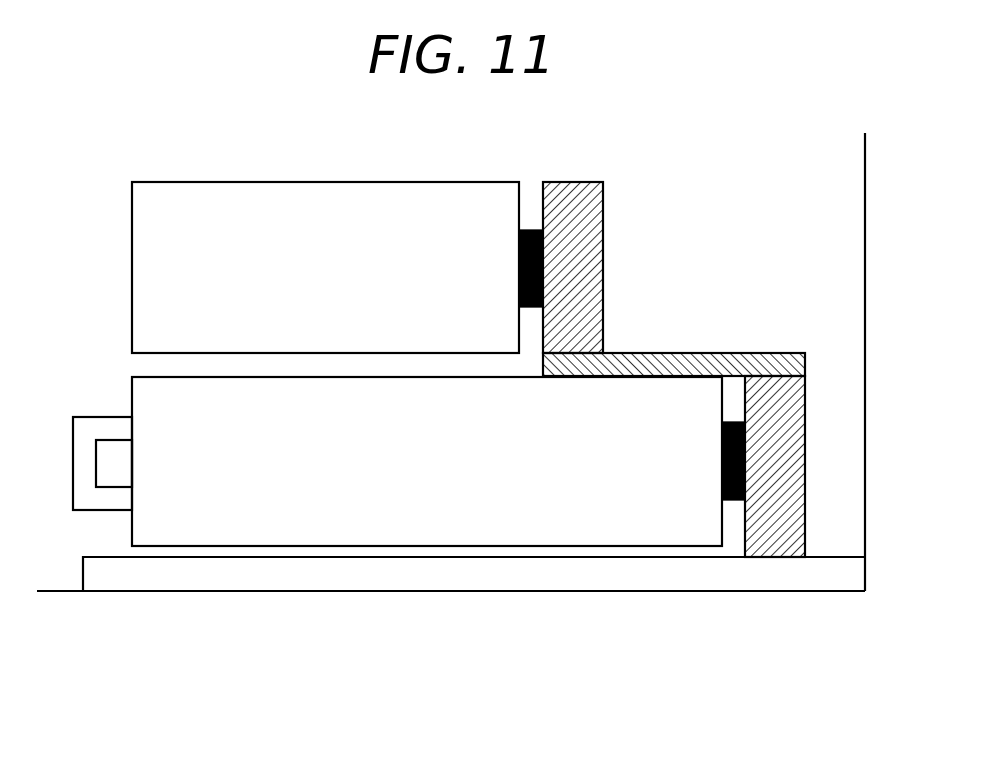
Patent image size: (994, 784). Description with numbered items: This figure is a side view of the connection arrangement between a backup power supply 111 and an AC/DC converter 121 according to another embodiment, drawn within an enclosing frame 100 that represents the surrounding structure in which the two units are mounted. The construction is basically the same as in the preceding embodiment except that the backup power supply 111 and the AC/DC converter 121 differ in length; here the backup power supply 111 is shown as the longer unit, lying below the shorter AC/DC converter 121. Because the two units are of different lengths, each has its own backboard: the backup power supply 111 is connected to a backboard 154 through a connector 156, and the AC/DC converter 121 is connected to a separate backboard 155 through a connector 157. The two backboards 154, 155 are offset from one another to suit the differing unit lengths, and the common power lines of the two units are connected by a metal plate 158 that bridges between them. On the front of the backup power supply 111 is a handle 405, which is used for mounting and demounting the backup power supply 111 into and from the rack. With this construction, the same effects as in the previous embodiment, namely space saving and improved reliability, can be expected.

The image forming apparatus main body 100 is at (919, 253).
The backup power supply 111 is at (136, 394).
The AC/DC converter 121 is at (136, 252).
The backboard 154 is at (834, 460).
The backboard 155 is at (635, 268).
The connector 156 is at (721, 458).
The connector 157 is at (530, 230).
The metal plate 158 is at (688, 352).
The handle 405 is at (102, 512).